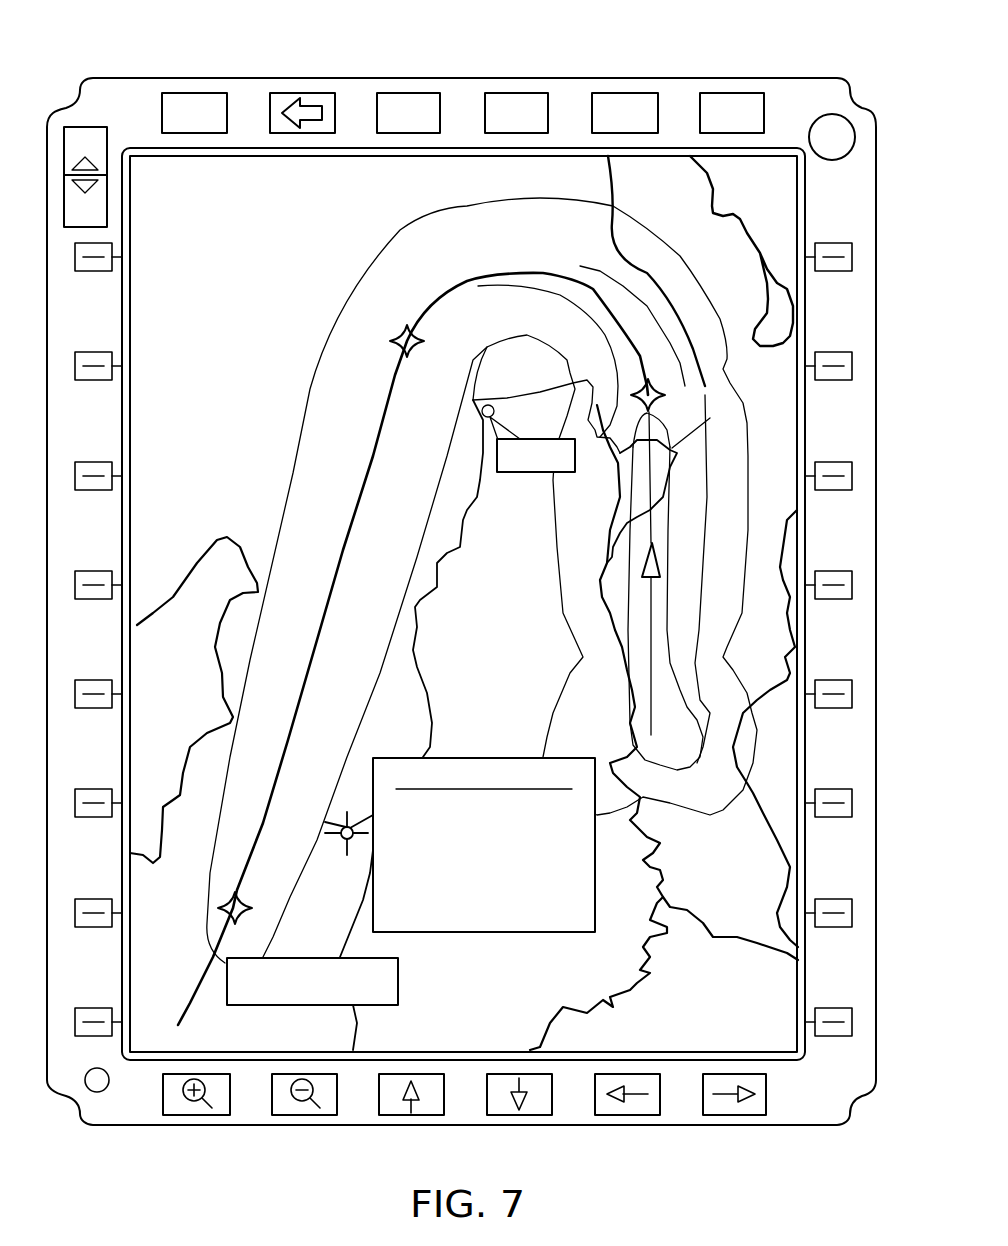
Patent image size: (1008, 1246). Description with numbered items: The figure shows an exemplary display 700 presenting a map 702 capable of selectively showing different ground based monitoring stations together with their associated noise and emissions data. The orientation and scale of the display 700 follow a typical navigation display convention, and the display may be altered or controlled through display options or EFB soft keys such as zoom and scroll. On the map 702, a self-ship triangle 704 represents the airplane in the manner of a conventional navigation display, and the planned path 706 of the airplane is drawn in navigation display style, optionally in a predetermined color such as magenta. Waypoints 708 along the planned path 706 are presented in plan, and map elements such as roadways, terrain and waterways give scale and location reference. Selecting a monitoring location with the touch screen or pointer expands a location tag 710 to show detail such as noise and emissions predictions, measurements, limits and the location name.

The display 700 is at (609, 76).
The map 702 is at (248, 251).
The self-ship triangle 704 is at (660, 563).
The planned path 706 is at (378, 424).
The waypoints 708 is at (407, 338).
The location tag 710 is at (480, 758).